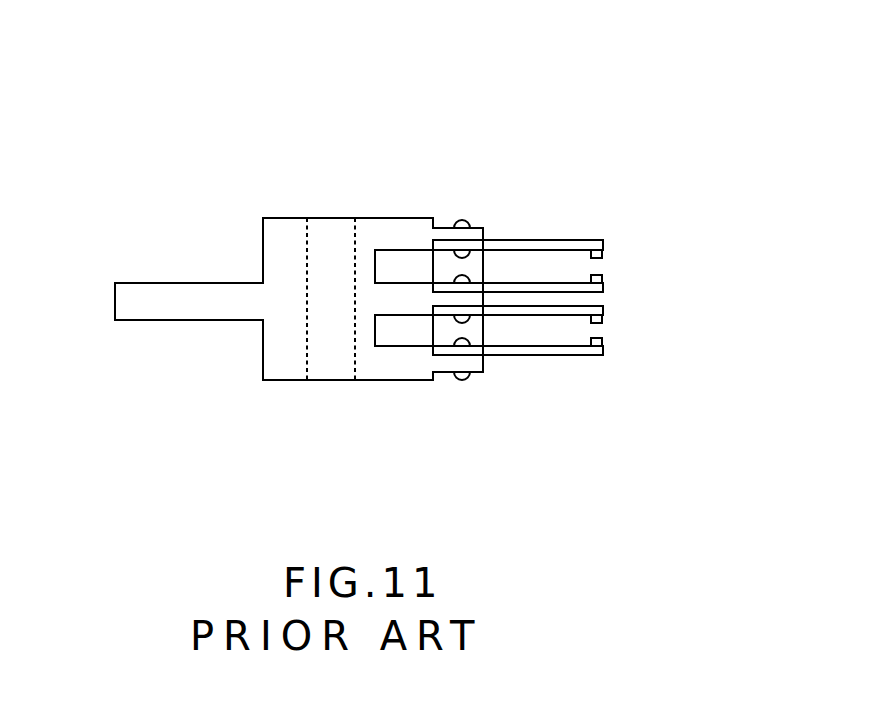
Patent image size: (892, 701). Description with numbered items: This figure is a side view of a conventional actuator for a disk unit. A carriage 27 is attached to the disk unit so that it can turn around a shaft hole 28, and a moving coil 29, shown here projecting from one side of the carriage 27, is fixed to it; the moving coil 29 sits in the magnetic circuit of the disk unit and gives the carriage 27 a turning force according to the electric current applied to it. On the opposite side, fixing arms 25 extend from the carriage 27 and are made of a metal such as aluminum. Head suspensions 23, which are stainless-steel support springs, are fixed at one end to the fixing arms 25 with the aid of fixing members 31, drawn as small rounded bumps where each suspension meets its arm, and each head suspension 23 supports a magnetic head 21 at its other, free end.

The magnetic head 21 is at (603, 254).
The head suspension 23 is at (552, 240).
The fixing arm 25 is at (392, 218).
The carriage 27 is at (283, 218).
The shaft hole 28 is at (328, 349).
The moving coil 29 is at (192, 283).
The fixing member 31 is at (462, 220).